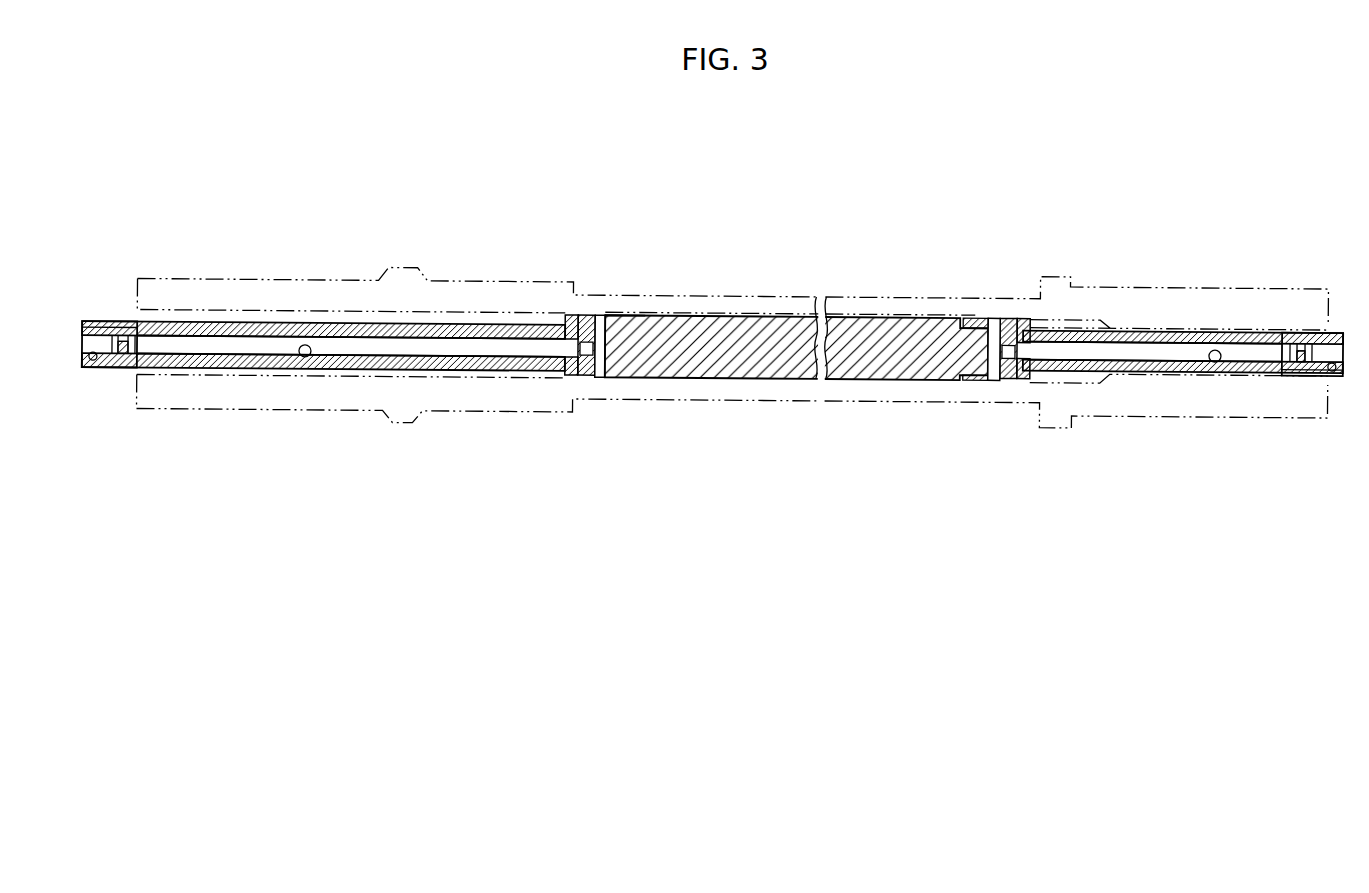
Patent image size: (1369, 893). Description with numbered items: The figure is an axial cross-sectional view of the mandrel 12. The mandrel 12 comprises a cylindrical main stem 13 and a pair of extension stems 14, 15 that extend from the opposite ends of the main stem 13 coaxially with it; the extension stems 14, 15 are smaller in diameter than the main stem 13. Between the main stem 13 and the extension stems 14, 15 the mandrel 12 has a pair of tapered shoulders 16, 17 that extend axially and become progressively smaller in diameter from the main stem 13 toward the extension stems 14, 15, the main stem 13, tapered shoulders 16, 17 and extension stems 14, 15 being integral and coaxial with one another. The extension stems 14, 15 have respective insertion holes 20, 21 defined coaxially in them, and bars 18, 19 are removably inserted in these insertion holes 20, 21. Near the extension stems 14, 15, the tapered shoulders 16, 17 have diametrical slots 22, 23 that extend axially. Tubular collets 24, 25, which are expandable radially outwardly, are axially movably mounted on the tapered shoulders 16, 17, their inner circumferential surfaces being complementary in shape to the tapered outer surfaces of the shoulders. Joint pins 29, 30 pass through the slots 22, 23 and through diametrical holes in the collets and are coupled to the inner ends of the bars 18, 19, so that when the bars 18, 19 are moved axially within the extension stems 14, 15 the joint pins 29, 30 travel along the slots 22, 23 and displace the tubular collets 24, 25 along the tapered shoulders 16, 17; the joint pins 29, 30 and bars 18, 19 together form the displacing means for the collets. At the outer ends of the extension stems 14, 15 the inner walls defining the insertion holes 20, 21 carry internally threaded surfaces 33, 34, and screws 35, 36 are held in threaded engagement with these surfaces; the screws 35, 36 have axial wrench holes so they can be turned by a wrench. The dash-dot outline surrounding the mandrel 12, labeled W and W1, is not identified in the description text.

The mandrel 12 is at (1150, 180).
The cylindrical main stem 13 is at (763, 339).
The extension stem 14 is at (328, 328).
The extension stem 15 is at (1193, 324).
The tapered shoulder 16 is at (638, 318).
The tapered shoulder 17 is at (968, 318).
The bar 18 is at (441, 347).
The bar 19 is at (1137, 341).
The insertion hole 20 is at (317, 357).
The insertion hole 21 is at (1218, 373).
The diametrical slot 22 is at (602, 318).
The diametrical slot 23 is at (1005, 317).
The tubular collet 24 is at (612, 318).
The tubular collet 25 is at (990, 318).
The joint pin 29 is at (583, 314).
The joint pin 30 is at (1017, 317).
The internally threaded surface 33 is at (89, 368).
The internally threaded surface 34 is at (1337, 372).
The screw 35 is at (118, 345).
The screw 36 is at (1303, 323).
The workpiece W is at (1252, 283).
The workpiece inner wall W1 is at (443, 379).